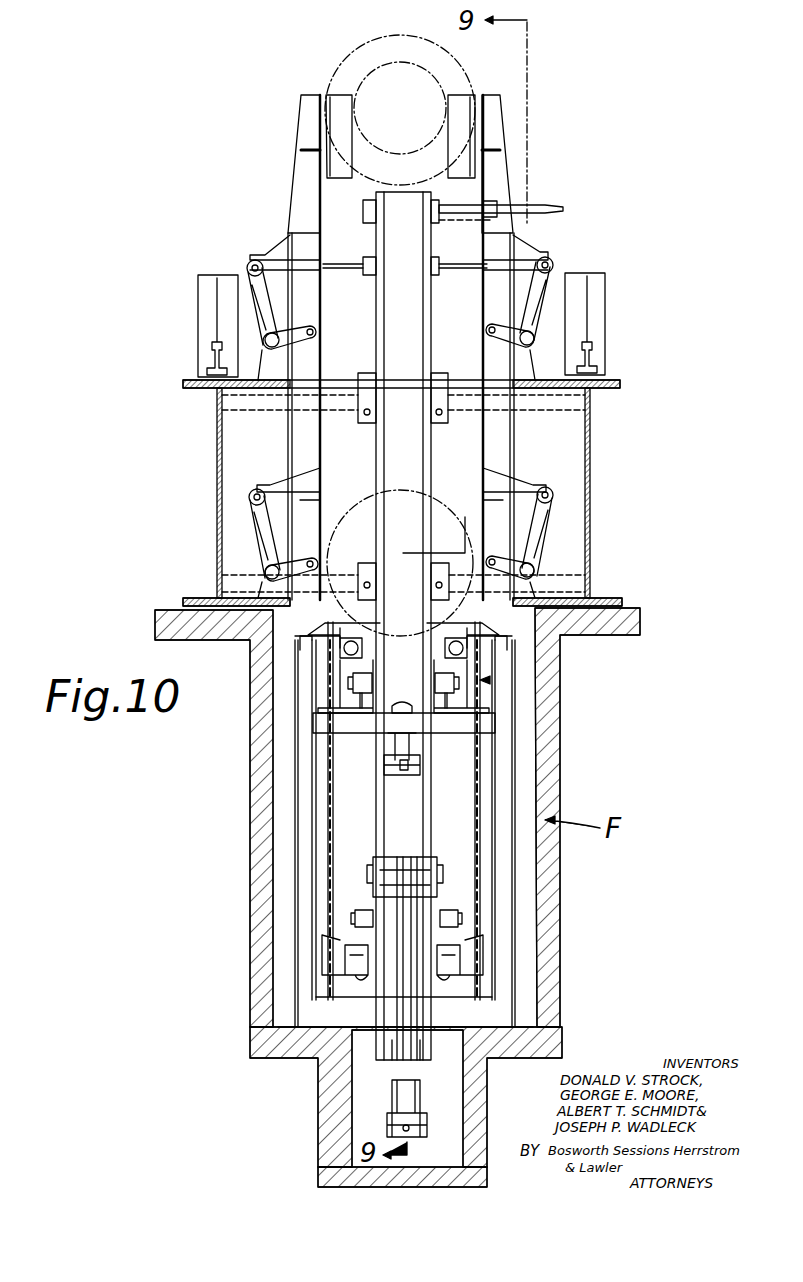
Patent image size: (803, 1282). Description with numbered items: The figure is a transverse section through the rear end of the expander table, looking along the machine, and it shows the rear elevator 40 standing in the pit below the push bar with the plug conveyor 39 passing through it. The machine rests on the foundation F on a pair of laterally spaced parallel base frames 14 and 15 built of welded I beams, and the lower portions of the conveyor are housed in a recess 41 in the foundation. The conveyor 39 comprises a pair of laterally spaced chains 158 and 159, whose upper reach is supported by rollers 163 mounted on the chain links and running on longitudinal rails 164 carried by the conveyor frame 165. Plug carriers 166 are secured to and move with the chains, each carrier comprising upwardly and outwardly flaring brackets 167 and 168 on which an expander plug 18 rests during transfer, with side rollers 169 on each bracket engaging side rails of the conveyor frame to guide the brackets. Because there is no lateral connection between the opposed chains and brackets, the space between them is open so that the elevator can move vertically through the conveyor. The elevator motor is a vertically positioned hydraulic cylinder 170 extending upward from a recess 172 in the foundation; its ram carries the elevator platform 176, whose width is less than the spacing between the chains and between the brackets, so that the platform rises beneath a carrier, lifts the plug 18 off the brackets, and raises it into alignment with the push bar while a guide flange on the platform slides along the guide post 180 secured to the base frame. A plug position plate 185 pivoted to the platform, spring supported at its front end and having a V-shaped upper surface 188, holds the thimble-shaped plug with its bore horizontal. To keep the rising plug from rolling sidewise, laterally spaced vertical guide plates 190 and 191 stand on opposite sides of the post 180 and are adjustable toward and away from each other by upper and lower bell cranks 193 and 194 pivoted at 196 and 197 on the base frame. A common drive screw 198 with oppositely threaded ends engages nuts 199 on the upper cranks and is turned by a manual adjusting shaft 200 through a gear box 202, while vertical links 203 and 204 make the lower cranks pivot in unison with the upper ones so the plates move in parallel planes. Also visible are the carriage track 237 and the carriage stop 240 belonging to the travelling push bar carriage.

The base frame 14 is at (590, 457).
The base frame 15 is at (217, 460).
The expander plug 18 is at (440, 78).
The conveyor 39 is at (490, 680).
The rear elevator 40 is at (583, 257).
The recess 41 is at (525, 745).
The chain 158 is at (352, 684).
The chain 159 is at (459, 682).
The roller 163 is at (352, 712).
The longitudinal rail 164 is at (360, 708).
The conveyor frame 165 is at (330, 731).
The plug carrier 166 is at (580, 622).
The bracket 167 is at (360, 646).
The bracket 168 is at (450, 650).
The side roller 169 is at (340, 650).
The hydraulic cylinder 170 is at (392, 1040).
The recess 172 is at (370, 1108).
The elevator platform 176 is at (392, 762).
The guide post 180 is at (431, 455).
The plug position plate 185 is at (395, 728).
The upper surface 188 is at (402, 704).
The guide plate 190 is at (310, 185).
The guide plate 191 is at (497, 166).
The upper bell crank 193 is at (257, 302).
The lower bell crank 194 is at (255, 526).
The pivot 196 is at (402, 372).
The pivot 197 is at (262, 578).
The drive screw 198 is at (467, 290).
The nut 199 is at (252, 258).
The manual adjusting shaft 200 is at (535, 208).
The gear box 202 is at (372, 242).
The vertical link 203 is at (312, 454).
The vertical link 204 is at (495, 450).
The track 237 is at (211, 347).
The carriage stop 240 is at (197, 293).